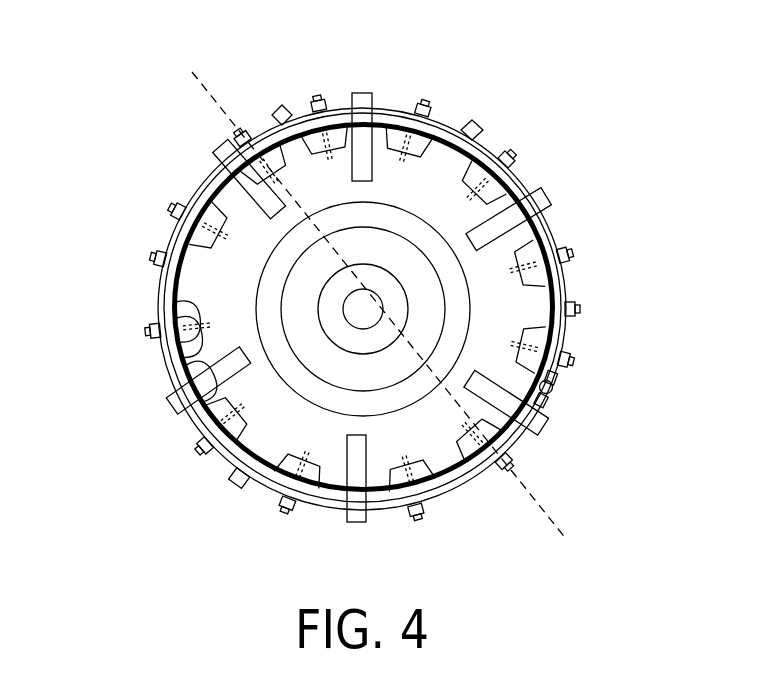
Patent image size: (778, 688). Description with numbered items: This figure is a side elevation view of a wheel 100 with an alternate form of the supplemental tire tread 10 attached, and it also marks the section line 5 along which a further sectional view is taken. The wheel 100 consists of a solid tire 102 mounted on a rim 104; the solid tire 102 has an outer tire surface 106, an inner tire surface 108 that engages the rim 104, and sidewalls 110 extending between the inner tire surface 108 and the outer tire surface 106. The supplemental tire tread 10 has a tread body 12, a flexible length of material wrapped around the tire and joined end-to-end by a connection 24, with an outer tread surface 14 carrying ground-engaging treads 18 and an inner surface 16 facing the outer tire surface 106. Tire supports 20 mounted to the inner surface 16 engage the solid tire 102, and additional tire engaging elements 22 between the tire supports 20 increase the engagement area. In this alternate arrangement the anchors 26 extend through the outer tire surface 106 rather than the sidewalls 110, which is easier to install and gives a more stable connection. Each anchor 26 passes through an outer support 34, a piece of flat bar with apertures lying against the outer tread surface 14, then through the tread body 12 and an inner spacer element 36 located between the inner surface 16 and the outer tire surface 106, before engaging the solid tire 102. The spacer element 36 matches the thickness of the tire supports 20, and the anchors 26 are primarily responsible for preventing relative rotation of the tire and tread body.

The section line 5- 5 is at (192, 72).
The supplemental tire tread 10 is at (550, 230).
The tread body 12 is at (450, 115).
The outer tread surface 14 is at (347, 107).
The inner surface 16 is at (389, 108).
The treads 18 is at (213, 150).
The tire supports 20 is at (520, 185).
The tire engaging elements 22 is at (160, 268).
The connection 24 is at (553, 387).
The anchors 26 is at (204, 445).
The outer support 34 is at (165, 335).
The spacer element 36 is at (172, 346).
The wheel 100 is at (557, 288).
The solid tire 102 is at (558, 327).
The rim 104 is at (505, 428).
The outer tire surface 106 is at (466, 498).
The inner tire surface 108 is at (335, 418).
The sidewalls 110 is at (242, 468).